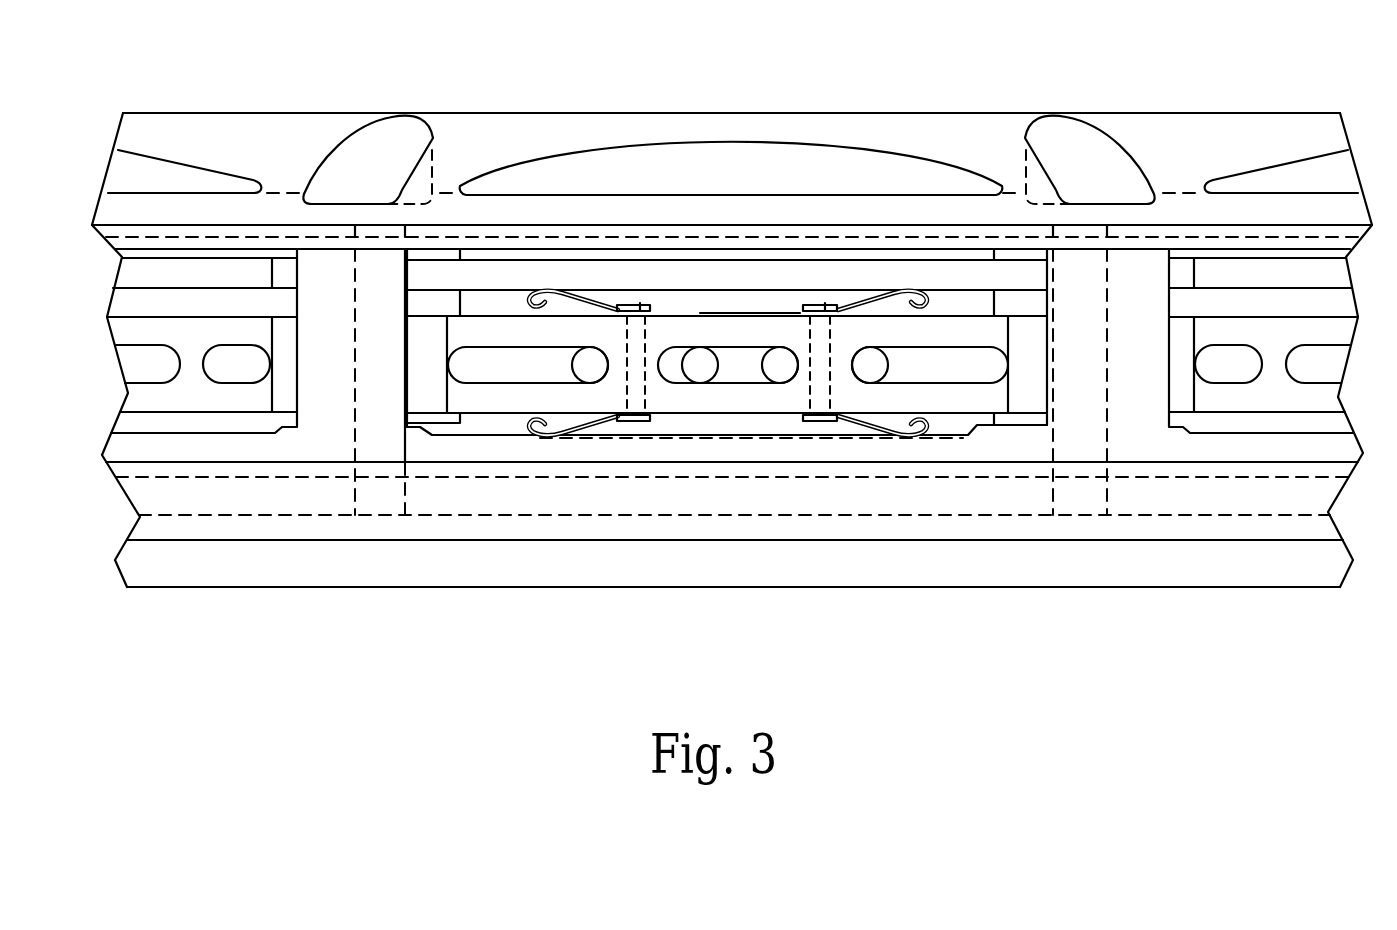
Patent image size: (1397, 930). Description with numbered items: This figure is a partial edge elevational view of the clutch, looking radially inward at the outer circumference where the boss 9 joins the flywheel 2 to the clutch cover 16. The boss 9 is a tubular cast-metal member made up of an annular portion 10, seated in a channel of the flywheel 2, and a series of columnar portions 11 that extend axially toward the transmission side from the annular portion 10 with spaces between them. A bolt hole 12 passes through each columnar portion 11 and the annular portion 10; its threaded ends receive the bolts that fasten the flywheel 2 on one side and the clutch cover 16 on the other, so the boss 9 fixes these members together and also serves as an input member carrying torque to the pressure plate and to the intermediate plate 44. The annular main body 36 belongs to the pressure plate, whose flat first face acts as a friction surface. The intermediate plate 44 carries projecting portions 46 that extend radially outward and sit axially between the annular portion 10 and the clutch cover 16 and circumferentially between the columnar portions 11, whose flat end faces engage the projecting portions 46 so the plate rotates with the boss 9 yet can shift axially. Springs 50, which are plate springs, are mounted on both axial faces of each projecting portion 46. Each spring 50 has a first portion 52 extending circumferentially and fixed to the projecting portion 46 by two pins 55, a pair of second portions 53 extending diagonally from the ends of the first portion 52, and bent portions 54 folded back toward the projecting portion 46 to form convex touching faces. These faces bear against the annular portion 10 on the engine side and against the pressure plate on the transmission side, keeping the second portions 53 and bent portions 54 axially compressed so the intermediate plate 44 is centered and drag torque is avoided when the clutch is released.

The flywheel 2 is at (890, 527).
The boss 9 is at (1180, 402).
The annular portion 10 is at (686, 446).
The columnar portions 11 is at (1135, 290).
The bolt hole 12 is at (1107, 290).
The clutch cover 16 is at (862, 148).
The annular main body 36 is at (628, 275).
The intermediate plate 44 is at (507, 392).
The projecting portions 46 is at (777, 393).
The springs 50 is at (750, 305).
The first portion 52 is at (717, 421).
The second portions 53 is at (860, 427).
The bent portions 54 is at (935, 420).
The pins 55 is at (815, 303).